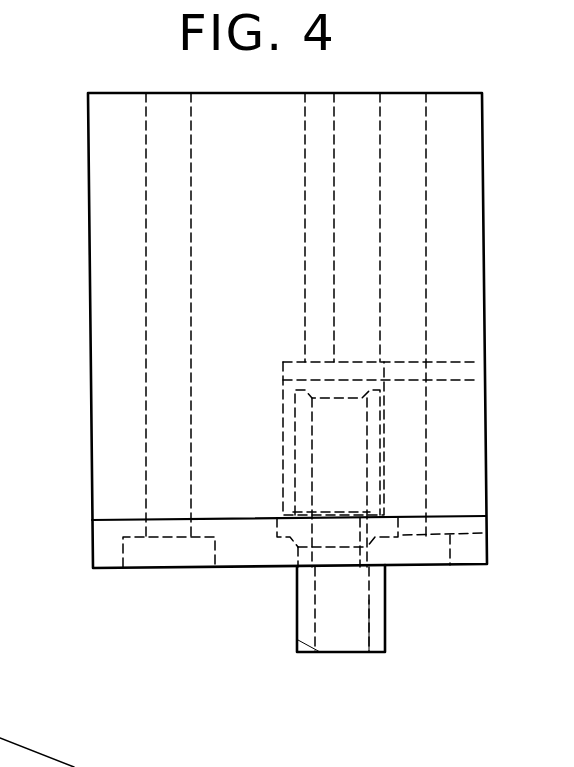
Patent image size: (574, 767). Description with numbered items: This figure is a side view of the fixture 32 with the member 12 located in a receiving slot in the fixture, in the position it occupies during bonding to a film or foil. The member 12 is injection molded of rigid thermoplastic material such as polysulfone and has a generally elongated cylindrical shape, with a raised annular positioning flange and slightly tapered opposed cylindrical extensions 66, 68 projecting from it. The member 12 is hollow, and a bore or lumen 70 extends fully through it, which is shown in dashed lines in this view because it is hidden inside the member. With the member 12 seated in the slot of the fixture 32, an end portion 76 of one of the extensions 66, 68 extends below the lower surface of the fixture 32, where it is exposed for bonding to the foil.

The fixture 32 is at (91, 474).
The member 12 is at (295, 583).
The cylindrical extension 66 is at (378, 450).
The end portion 76 is at (394, 572).
The cylindrical extension 68 is at (304, 640).
The bore or lumen 70 is at (368, 616).